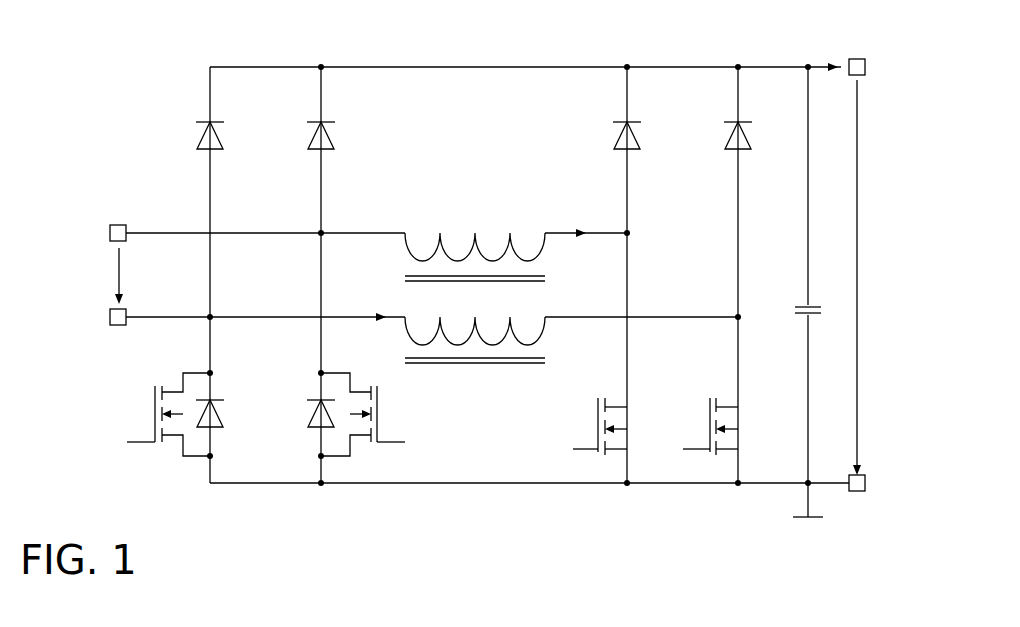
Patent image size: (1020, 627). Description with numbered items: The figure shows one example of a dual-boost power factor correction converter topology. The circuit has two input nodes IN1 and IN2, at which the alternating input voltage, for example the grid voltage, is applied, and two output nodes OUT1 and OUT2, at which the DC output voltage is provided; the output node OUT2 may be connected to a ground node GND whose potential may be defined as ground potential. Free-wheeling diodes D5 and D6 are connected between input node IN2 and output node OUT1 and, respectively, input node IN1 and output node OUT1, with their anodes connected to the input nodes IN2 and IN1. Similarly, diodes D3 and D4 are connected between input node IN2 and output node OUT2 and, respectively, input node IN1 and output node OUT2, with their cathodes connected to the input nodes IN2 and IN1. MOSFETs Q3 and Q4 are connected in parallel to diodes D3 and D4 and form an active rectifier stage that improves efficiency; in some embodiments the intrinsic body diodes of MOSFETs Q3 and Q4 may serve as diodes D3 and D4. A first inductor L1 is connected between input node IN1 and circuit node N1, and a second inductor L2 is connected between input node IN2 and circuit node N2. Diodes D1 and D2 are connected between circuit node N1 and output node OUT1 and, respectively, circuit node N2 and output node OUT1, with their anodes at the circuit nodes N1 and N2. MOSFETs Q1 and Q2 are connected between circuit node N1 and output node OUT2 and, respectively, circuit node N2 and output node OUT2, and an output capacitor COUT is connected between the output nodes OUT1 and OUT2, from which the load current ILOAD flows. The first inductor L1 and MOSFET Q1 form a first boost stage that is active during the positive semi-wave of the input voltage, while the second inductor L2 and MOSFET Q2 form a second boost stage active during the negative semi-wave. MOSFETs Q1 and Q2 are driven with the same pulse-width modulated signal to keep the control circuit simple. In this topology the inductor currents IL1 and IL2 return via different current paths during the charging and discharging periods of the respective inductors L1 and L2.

The diode D1 is at (641, 126).
The diode D2 is at (752, 126).
The diode D3 is at (224, 404).
The diode D4 is at (309, 404).
The free-wheeling diode D5 is at (223, 126).
The free-wheeling diode D6 is at (335, 126).
The MOSFET Q1 is at (599, 421).
The MOSFET Q2 is at (710, 421).
The MOSFET Q3 is at (168, 423).
The MOSFET Q4 is at (363, 423).
The first inductor L1 is at (461, 257).
The second inductor L2 is at (486, 340).
The output capacitor COUT is at (792, 275).
The input node IN1 is at (323, 231).
The input node IN2 is at (212, 315).
The circuit node N1 is at (629, 232).
The circuit node N2 is at (736, 315).
The output node OUT1 is at (806, 65).
The output node OUT2 is at (806, 481).
The ground node GND is at (820, 516).
The inductor current IL1 is at (578, 221).
The inductor current IL2 is at (378, 305).
The load current ILOAD is at (834, 93).